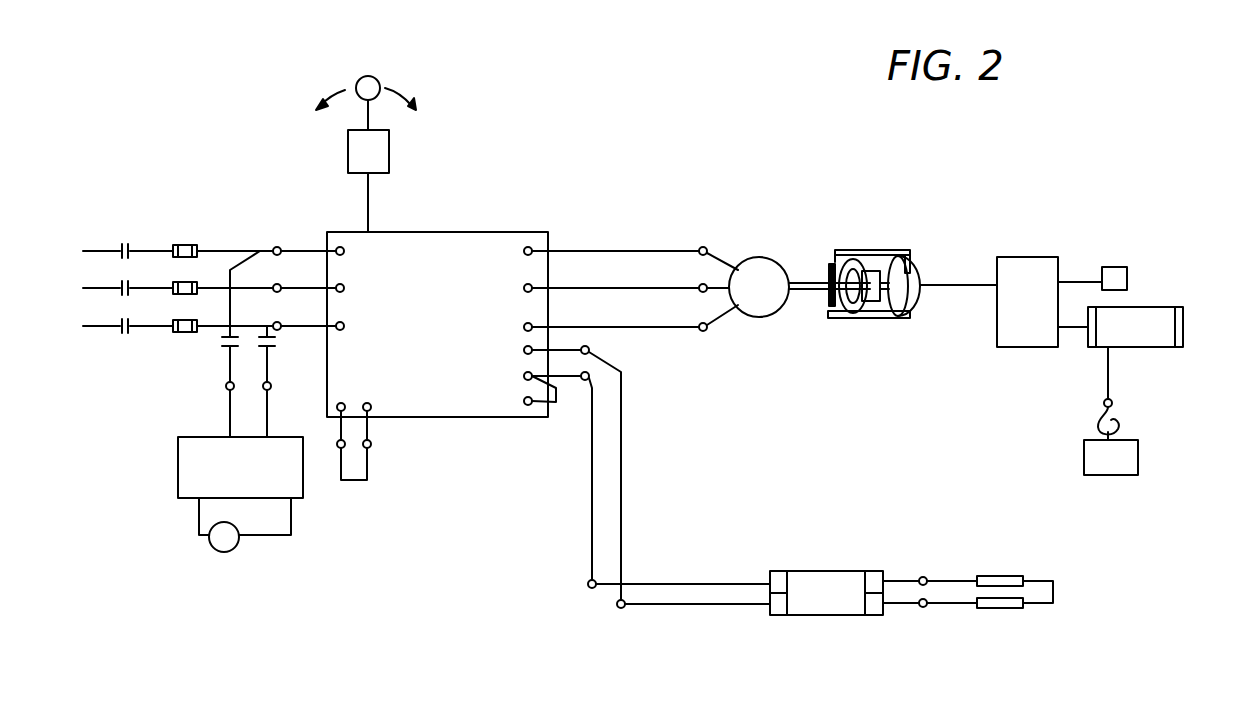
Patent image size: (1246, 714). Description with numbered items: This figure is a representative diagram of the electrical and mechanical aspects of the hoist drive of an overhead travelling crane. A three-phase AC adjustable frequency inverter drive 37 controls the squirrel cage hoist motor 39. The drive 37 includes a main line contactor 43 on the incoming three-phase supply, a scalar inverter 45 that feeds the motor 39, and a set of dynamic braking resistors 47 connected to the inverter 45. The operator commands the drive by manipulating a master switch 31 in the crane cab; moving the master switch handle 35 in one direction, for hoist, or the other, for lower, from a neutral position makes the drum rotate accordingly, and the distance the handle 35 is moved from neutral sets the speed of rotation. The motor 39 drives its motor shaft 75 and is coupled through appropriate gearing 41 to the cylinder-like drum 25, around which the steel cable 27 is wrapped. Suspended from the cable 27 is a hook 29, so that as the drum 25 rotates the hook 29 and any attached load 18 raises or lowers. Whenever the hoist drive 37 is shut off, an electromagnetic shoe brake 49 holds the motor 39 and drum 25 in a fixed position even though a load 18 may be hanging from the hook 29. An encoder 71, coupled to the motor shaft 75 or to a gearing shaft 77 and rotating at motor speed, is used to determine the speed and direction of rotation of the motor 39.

The load 18 is at (1092, 462).
The drum 25 is at (1155, 315).
The cable 27 is at (1108, 375).
The hook 29 is at (1095, 421).
The master switch 31 is at (383, 158).
The master switch handle 35 is at (370, 86).
The adjustable frequency inverter drive 37 is at (620, 160).
The hoist motor 39 is at (757, 256).
The gearing 41 is at (1020, 257).
The main line contactor 43 is at (125, 238).
The scalar inverter 45 is at (443, 247).
The dynamic braking resistors 47 is at (1000, 610).
The electromagnetic shoe brake 49 is at (865, 330).
The encoder 71 is at (1115, 268).
The motor shaft 75 is at (805, 282).
The gearing shaft 77 is at (1086, 282).